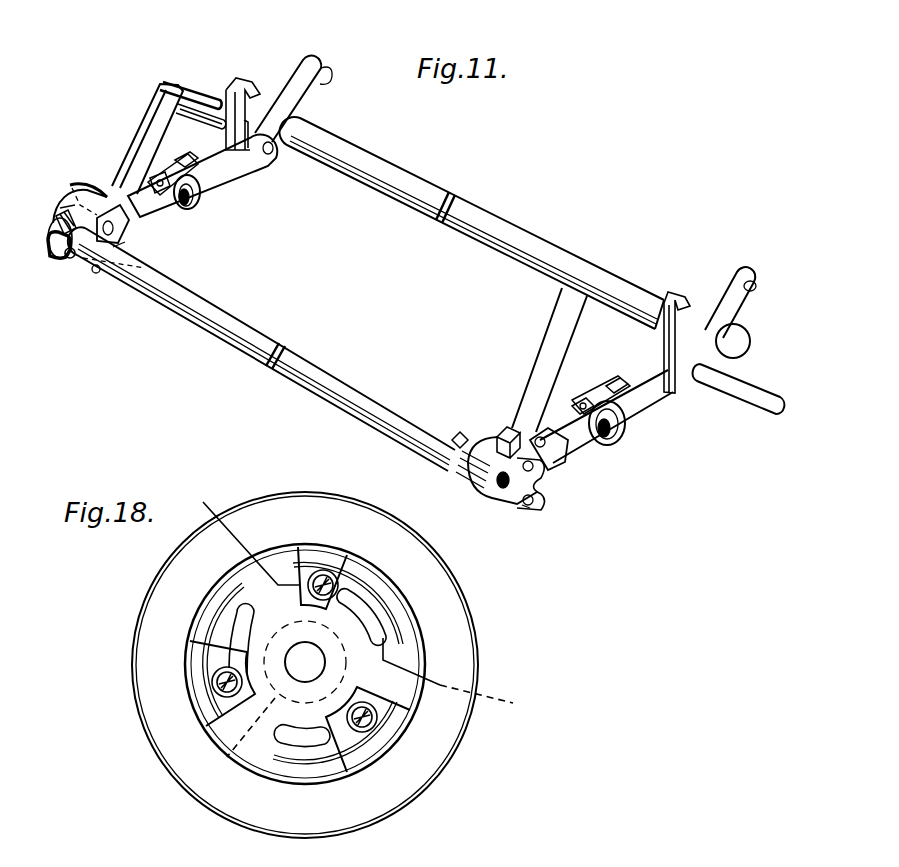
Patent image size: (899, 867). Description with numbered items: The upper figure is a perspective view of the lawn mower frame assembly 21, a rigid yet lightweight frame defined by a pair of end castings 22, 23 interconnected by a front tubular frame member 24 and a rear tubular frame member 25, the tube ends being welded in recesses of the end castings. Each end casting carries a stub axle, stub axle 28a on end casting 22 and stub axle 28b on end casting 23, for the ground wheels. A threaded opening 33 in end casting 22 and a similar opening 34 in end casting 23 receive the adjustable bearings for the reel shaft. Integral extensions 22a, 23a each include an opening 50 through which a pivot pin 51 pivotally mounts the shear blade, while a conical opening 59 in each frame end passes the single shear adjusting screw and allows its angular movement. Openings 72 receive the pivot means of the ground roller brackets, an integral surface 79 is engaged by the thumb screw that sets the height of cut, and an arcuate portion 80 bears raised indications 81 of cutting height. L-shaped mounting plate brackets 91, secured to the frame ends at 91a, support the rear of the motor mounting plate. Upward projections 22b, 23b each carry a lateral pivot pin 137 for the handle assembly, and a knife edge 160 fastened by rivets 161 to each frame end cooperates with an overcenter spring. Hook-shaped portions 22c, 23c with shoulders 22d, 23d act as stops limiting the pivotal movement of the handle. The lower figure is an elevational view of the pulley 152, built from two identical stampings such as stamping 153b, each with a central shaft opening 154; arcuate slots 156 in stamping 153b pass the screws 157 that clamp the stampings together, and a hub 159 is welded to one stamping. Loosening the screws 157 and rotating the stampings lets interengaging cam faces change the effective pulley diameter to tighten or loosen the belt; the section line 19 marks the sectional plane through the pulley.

In FIG. 18, the section line 19- 19 is at (182, 516).
In FIG. 11, the frame assembly 21 is at (392, 288).
In FIG. 11, the end casting 22 is at (238, 178).
In FIG. 11, the integral extension 22a is at (97, 275).
In FIG. 11, the integral projection 22b is at (332, 76).
In FIG. 11, the hook-shaped portion 22c is at (232, 84).
In FIG. 11, the shoulder 22d is at (280, 153).
In FIG. 11, the end casting 23 is at (662, 398).
In FIG. 11, the integral extension 23a is at (522, 508).
In FIG. 11, the integral projection 23b is at (750, 274).
In FIG. 11, the hook-shaped portion 23c is at (704, 310).
In FIG. 11, the shoulder 23d is at (662, 336).
In FIG. 11, the front tubular frame member 24 is at (500, 226).
In FIG. 11, the rear tubular frame member 25 is at (372, 385).
In FIG. 11, the stub axle 28a is at (177, 103).
In FIG. 11, the stub axle 28b is at (752, 390).
In FIG. 11, the opening 33 is at (195, 200).
In FIG. 11, the opening 34 is at (624, 430).
In FIG. 11, the opening 50 is at (125, 246).
In FIG. 11, the pivot pin 51 is at (75, 205).
In FIG. 11, the opening 59 is at (130, 222).
In FIG. 11, the opening 72 is at (70, 262).
In FIG. 11, the surface 79 is at (506, 426).
In FIG. 11, the arcuate portion 80 is at (57, 247).
In FIG. 11, the raised indications 81 is at (458, 434).
In FIG. 11, the mounting plate bracket 91 is at (172, 84).
In FIG. 11, the rivet connection 91a is at (533, 470).
In FIG. 11, the pivot pin 137 is at (303, 60).
In FIG. 11, the knife edge 160 is at (176, 157).
In FIG. 11, the rivets 161 is at (152, 180).
In FIG. 18, the pulley 152 is at (169, 770).
In FIG. 18, the metal stamping 153b is at (445, 752).
In FIG. 18, the central shaft opening 154 is at (309, 650).
In FIG. 18, the arcuate slots 156 is at (364, 600).
In FIG. 18, the screws 157 is at (334, 571).
In FIG. 18, the hub 159 is at (245, 754).